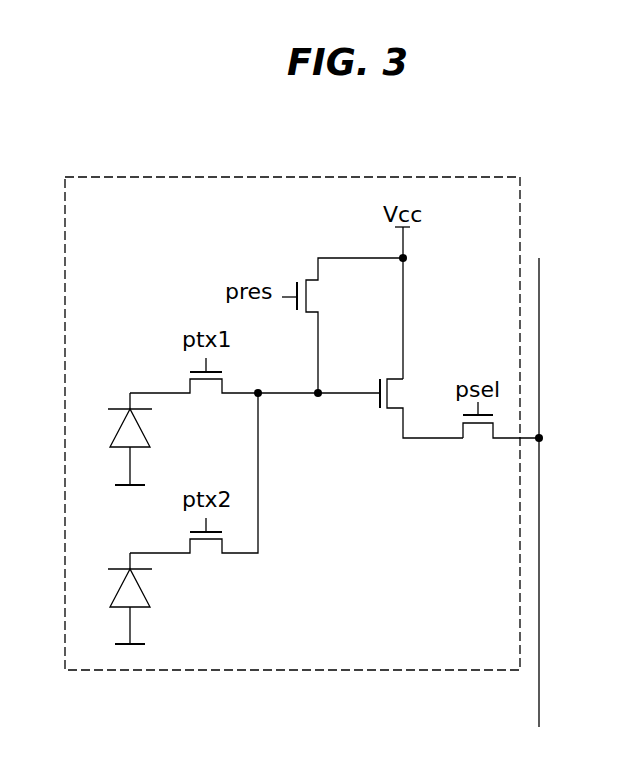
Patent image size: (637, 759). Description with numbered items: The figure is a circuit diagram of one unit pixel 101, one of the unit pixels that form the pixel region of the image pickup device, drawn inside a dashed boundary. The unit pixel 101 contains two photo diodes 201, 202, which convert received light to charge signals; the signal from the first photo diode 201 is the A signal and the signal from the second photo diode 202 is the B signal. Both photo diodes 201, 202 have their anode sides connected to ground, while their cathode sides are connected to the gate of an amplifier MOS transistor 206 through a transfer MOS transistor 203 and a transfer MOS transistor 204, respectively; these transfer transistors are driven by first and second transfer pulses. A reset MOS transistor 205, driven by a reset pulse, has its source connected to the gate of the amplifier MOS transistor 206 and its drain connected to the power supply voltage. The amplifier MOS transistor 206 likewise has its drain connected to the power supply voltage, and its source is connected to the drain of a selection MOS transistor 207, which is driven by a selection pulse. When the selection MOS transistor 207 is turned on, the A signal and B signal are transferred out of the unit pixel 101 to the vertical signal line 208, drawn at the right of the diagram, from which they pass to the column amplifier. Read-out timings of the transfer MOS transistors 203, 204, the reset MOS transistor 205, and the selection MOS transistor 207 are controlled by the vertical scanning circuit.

The unit pixel 101 is at (445, 177).
The photo diode 201 is at (152, 428).
The photo diode 202 is at (152, 588).
The transfer MOS transistor 203 is at (190, 380).
The transfer MOS transistor 204 is at (190, 540).
The reset MOS transistor 205 is at (304, 280).
The amplifier MOS transistor 206 is at (390, 410).
The selection MOS transistor 207 is at (480, 441).
The vertical signal line 208 is at (541, 318).